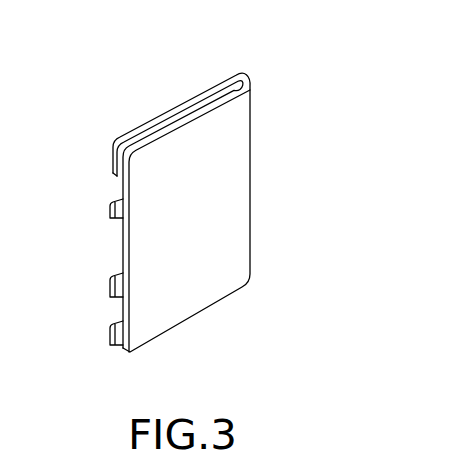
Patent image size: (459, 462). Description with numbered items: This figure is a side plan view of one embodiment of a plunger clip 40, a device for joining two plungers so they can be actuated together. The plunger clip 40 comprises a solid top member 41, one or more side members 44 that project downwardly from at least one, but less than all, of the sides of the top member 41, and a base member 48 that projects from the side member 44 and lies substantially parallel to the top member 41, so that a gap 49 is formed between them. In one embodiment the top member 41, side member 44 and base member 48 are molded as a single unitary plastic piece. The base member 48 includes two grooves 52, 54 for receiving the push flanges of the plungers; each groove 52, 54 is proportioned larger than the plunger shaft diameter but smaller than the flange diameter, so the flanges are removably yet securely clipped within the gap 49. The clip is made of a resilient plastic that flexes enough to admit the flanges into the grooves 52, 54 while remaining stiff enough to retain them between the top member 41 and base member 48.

The plunger clip 40 is at (223, 189).
The top member 41 is at (200, 292).
The side member 44 is at (249, 81).
The base member 48 is at (120, 138).
The gap 49 is at (218, 97).
The groove 52 is at (112, 310).
The groove 54 is at (115, 187).